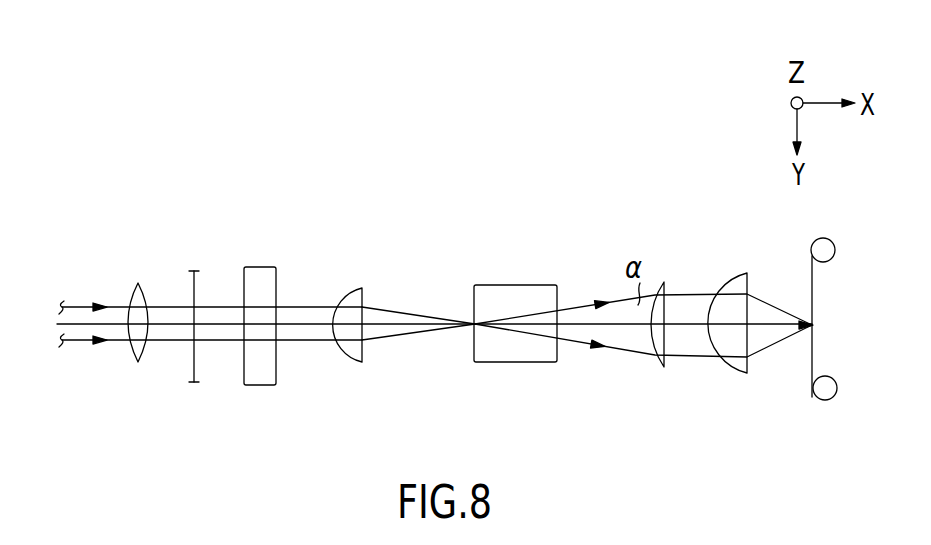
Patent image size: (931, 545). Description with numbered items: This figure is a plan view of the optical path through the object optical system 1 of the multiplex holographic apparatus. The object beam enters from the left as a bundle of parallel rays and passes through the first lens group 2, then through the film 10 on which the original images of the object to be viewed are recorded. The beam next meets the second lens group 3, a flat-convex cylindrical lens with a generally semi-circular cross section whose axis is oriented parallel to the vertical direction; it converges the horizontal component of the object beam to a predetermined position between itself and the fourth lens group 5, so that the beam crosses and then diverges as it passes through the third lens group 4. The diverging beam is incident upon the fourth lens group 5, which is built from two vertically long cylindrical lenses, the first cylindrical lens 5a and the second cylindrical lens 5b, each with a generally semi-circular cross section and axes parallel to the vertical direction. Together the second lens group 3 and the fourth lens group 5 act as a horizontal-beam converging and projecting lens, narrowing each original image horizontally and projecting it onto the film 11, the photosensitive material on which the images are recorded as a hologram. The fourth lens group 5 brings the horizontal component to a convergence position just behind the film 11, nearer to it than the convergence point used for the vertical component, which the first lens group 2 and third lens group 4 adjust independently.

The object optical system 1 is at (471, 397).
The first lens group 2 is at (276, 286).
The second lens group 3 is at (352, 362).
The third lens group 4 is at (530, 285).
The fourth lens group 5 is at (694, 325).
The first cylindrical lens 5a is at (661, 368).
The second cylindrical lens 5b is at (740, 374).
The film 10 is at (195, 372).
The film 11 is at (814, 360).